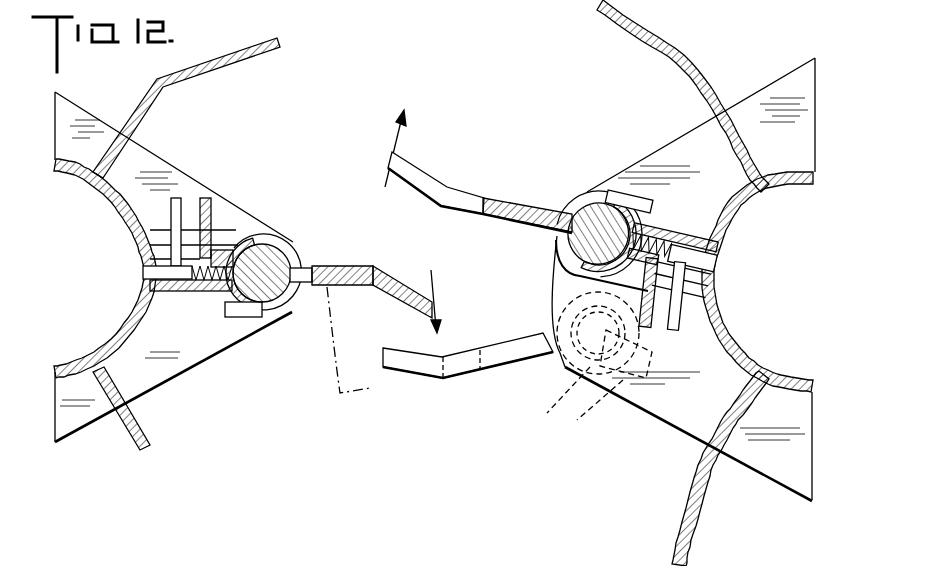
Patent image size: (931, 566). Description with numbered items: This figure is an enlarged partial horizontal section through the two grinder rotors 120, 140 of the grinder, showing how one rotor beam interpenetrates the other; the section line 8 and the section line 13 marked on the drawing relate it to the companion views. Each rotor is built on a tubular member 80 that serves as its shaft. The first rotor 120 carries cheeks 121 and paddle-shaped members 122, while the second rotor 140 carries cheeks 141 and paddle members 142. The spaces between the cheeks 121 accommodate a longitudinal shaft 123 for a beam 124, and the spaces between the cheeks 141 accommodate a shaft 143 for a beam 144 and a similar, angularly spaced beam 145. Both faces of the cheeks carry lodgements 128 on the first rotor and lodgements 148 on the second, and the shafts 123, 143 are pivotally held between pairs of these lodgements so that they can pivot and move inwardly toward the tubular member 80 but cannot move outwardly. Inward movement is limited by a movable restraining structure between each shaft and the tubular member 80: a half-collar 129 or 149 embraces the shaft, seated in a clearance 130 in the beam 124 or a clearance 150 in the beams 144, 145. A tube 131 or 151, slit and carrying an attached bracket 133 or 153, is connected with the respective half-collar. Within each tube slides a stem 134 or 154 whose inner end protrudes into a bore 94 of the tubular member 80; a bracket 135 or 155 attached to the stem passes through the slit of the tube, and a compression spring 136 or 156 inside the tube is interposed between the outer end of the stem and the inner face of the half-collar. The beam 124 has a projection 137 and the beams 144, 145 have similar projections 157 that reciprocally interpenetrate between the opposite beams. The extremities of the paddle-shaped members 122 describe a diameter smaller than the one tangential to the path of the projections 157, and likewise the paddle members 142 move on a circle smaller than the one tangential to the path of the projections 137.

The section line 8- 8 is at (386, 184).
The section line 13- 13 is at (57, 302).
The tubular member 80 is at (130, 327).
The bore 94 is at (148, 272).
The grinder rotor 120 is at (201, 360).
The cheek 121 is at (92, 122).
The paddle-shaped member 122 is at (242, 62).
The longitudinal shaft 123 is at (268, 260).
The beam 124 is at (375, 267).
The lodgement 128 is at (280, 315).
The half-collar 129 is at (244, 318).
The clearance 130 is at (300, 270).
The tube 131 is at (198, 292).
The bracket 133 is at (206, 198).
The stem 134 is at (157, 290).
The bracket 135 is at (176, 198).
The compression spring 136 is at (222, 262).
The projection 137 is at (392, 298).
The grinder rotor 140 is at (647, 408).
The cheek 141 is at (776, 92).
The paddle member 142 is at (688, 68).
The shaft 143 is at (603, 218).
The beam 144 is at (476, 384).
The beam 145 is at (524, 222).
The lodgement 148 is at (576, 208).
The half-collar 149 is at (590, 285).
The clearance 150 is at (563, 228).
The tube 151 is at (598, 332).
The bracket 153 is at (598, 333).
The stem 154 is at (702, 248).
The bracket 155 is at (688, 318).
The compression spring 156 is at (652, 256).
The projection 157 is at (424, 176).